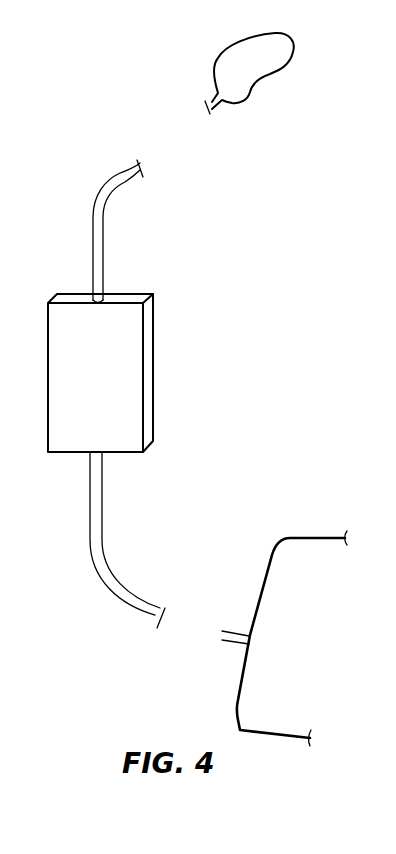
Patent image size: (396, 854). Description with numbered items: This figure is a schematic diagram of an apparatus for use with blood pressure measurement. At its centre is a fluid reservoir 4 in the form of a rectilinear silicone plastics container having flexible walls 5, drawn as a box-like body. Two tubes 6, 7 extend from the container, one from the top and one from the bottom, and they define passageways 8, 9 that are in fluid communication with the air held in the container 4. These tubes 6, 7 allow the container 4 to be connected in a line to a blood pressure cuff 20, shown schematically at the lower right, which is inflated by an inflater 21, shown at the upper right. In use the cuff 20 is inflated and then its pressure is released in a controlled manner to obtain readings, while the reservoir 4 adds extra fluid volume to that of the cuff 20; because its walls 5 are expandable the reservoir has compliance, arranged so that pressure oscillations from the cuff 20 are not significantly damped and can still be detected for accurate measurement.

The fluid reservoir 4 is at (145, 372).
The flexible walls 5 is at (115, 435).
The tube 6 is at (100, 530).
The tube 7 is at (100, 242).
The passageway 8 is at (165, 618).
The passageway 9 is at (140, 163).
The blood pressure cuff 20 is at (293, 556).
The inflater 21 is at (267, 65).